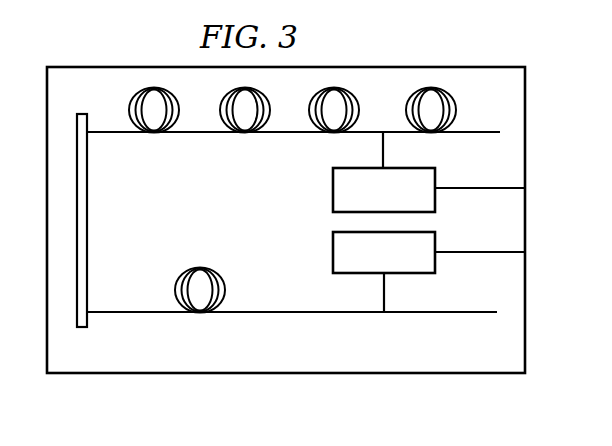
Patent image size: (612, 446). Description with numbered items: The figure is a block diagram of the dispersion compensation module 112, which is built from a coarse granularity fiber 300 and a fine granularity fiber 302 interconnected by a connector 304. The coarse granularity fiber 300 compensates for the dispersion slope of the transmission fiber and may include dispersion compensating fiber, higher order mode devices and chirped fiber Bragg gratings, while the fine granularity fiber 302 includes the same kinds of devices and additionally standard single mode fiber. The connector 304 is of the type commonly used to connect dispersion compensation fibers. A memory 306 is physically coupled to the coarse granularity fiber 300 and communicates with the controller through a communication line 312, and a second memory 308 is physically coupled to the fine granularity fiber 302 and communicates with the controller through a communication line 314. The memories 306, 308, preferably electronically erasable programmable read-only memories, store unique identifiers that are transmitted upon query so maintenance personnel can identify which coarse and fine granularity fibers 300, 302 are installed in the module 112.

The dispersion compensation module 112 is at (144, 67).
The coarse granularity fiber 300 is at (478, 130).
The fine granularity fiber 302 is at (407, 314).
The connector 304 is at (88, 222).
The memory 306 is at (333, 183).
The second memory 308 is at (333, 255).
The communication line 312 is at (480, 187).
The communication line 314 is at (480, 254).